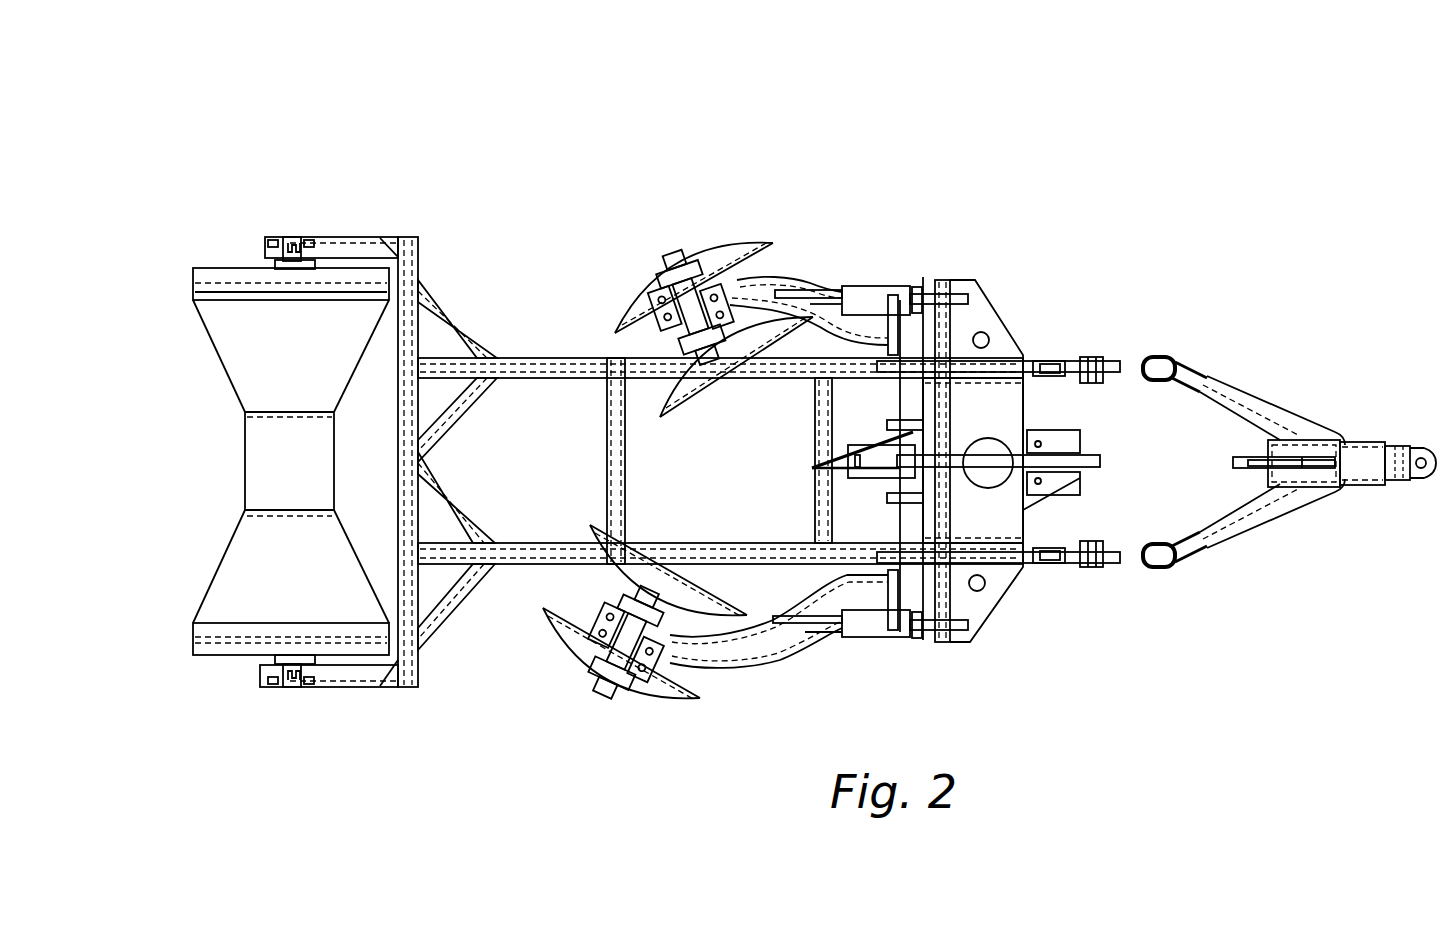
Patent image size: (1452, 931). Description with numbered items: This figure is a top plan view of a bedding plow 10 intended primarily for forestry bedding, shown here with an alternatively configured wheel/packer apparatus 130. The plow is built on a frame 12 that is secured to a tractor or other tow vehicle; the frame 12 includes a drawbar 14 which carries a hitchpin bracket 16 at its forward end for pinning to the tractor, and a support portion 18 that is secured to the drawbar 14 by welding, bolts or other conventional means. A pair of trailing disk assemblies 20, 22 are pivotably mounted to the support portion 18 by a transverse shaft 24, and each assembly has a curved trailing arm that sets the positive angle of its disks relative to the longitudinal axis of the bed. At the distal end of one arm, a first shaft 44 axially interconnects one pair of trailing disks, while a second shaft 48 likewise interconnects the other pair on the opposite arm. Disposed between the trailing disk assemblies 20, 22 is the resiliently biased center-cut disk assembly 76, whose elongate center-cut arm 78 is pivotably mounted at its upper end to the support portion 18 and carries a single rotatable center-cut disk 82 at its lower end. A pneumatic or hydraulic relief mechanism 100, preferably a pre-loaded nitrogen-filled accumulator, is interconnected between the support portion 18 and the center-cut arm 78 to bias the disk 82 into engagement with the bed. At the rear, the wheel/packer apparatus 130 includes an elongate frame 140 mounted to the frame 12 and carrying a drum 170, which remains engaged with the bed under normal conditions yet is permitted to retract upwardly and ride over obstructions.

The bedding plow 10 is at (840, 178).
The frame 12 is at (1224, 366).
The drawbar 14 is at (1172, 352).
The hitchpin bracket 16 is at (1418, 480).
The support portion 18 is at (1018, 290).
The trailing disk assembly 20 is at (680, 712).
The trailing disk assembly 22 is at (742, 242).
The transverse shaft 24 is at (925, 285).
The first shaft 44 is at (600, 690).
The second shaft 48 is at (670, 250).
The center-cut disk assembly 76 is at (800, 460).
The center-cut arm 78 is at (955, 470).
The center-cut disk 82 is at (842, 446).
The relief mechanism 100 is at (1005, 440).
The wheel/packer apparatus 130 is at (397, 205).
The elongate frame 140 is at (540, 356).
The drum 170 is at (212, 570).